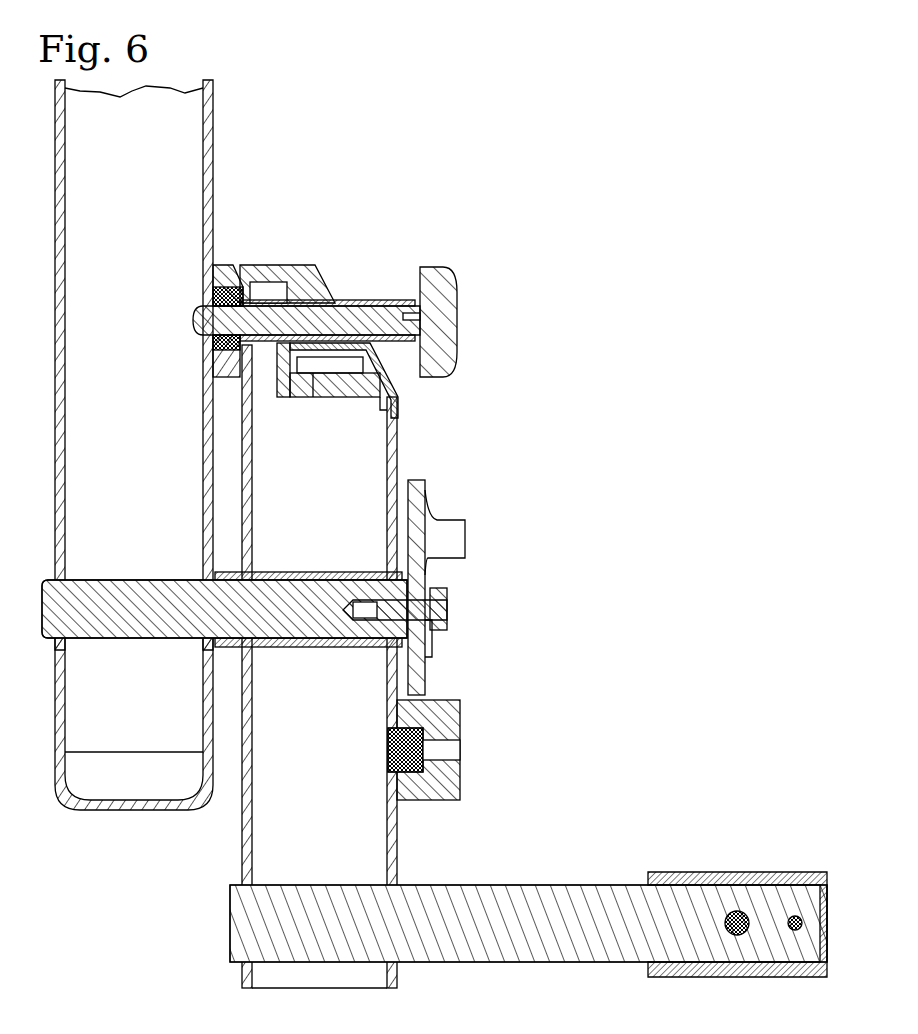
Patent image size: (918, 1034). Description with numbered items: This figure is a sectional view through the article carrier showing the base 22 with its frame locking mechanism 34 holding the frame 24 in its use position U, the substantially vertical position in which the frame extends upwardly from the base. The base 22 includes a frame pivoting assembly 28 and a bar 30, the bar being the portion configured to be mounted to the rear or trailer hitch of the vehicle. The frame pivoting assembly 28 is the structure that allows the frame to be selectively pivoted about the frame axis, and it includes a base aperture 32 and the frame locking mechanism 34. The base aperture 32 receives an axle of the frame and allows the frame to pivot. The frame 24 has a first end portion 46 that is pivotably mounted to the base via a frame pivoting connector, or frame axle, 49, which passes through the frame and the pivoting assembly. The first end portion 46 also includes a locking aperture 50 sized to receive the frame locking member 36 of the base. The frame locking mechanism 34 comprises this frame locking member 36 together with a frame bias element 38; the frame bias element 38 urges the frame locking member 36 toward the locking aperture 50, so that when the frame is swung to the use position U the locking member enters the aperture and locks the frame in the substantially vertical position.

The use position U is at (75, 296).
The frame 24 is at (75, 400).
The first end portion 46 is at (75, 692).
The frame pivoting connector 49 is at (52, 606).
The locking aperture 50 is at (195, 325).
The frame locking member 36 is at (300, 320).
The frame bias element 38 is at (362, 306).
The frame locking mechanism 34 is at (452, 352).
The base 22 is at (375, 442).
The base aperture 32 is at (370, 582).
The frame pivoting assembly 28 is at (375, 818).
The bar 30 is at (540, 962).